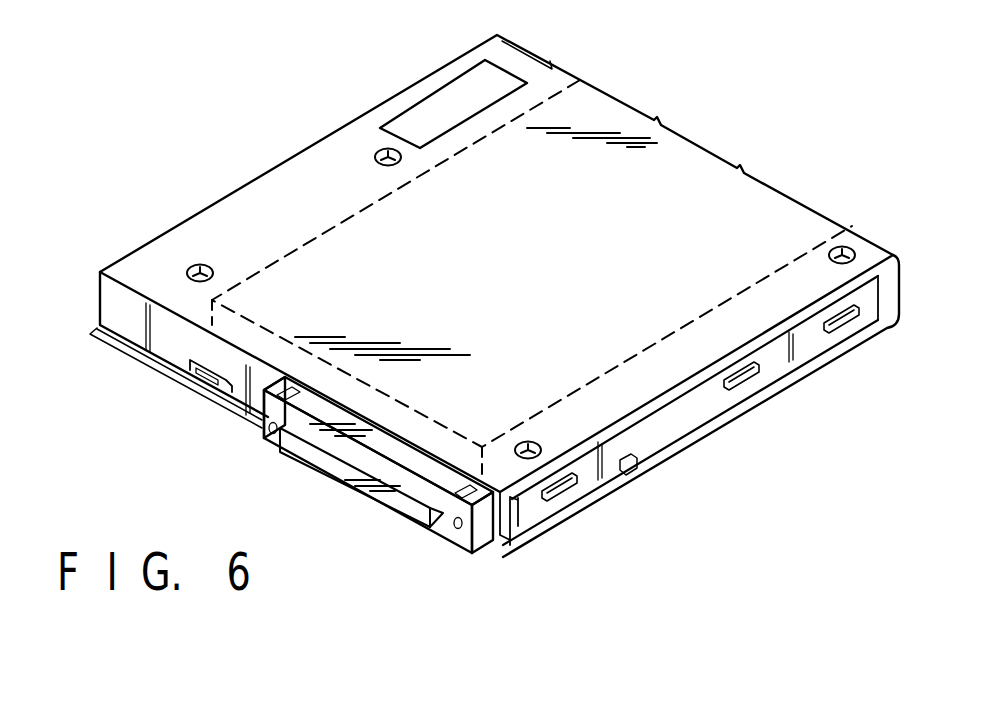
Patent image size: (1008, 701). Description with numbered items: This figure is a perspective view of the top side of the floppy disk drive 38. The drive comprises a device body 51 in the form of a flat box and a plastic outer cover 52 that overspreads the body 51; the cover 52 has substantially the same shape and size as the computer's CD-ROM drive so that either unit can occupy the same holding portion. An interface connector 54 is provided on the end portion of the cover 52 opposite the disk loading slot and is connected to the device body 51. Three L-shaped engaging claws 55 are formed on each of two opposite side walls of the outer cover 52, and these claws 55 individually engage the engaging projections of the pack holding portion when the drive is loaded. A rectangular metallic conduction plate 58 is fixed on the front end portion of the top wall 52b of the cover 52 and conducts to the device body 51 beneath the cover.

The floppy disk drive 38 is at (291, 188).
The device body 51 is at (610, 112).
The outer cover 52 is at (162, 257).
The top wall 52b is at (770, 197).
The interface connector 54 is at (322, 475).
The engaging claws 55 is at (847, 323).
The conduction plate 58 is at (432, 117).